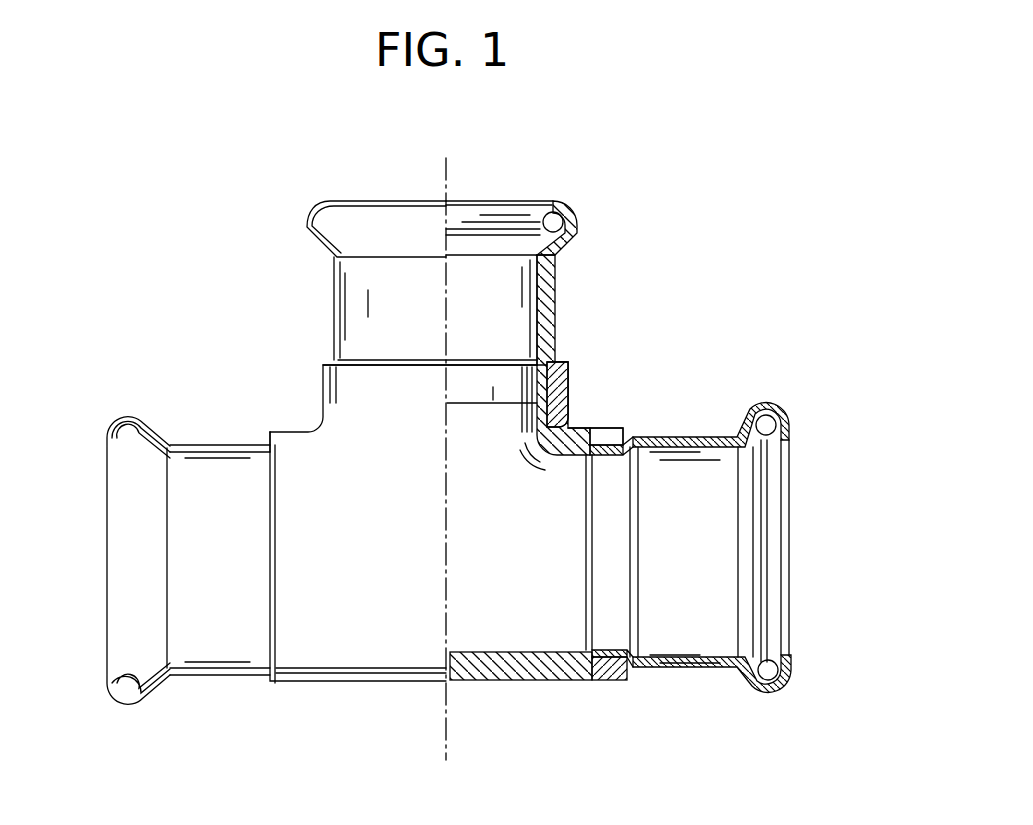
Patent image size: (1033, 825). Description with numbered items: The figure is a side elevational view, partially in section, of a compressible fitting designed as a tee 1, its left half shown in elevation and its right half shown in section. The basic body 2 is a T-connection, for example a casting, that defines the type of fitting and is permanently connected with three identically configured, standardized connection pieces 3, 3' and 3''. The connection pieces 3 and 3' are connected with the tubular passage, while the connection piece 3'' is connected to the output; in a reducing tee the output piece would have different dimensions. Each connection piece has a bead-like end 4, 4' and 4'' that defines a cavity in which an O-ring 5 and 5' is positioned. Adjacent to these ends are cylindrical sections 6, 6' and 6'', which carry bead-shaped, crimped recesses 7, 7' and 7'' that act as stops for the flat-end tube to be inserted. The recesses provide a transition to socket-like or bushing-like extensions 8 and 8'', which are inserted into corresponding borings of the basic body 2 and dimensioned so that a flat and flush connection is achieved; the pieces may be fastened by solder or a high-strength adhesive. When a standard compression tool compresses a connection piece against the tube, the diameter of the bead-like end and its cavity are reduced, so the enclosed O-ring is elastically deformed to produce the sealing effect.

The tee 1 is at (780, 198).
The basic body 2 is at (575, 437).
The connection piece 3 is at (710, 517).
The connection piece 3' is at (201, 521).
The connection piece 3'' is at (390, 310).
The bead-like end 4 is at (813, 485).
The bead-like end 4' is at (110, 543).
The bead-like end 4'' is at (400, 202).
The O-ring 5 is at (826, 541).
The O-ring 5' is at (593, 172).
The cylindrical section 6 is at (711, 385).
The cylindrical section 6' is at (216, 390).
The cylindrical section 6'' is at (597, 286).
The recess 7 is at (634, 605).
The recess 7' is at (244, 524).
The recess 7'' is at (498, 315).
The socket-like extension 8 is at (608, 599).
The socket-like extension 8'' is at (614, 375).